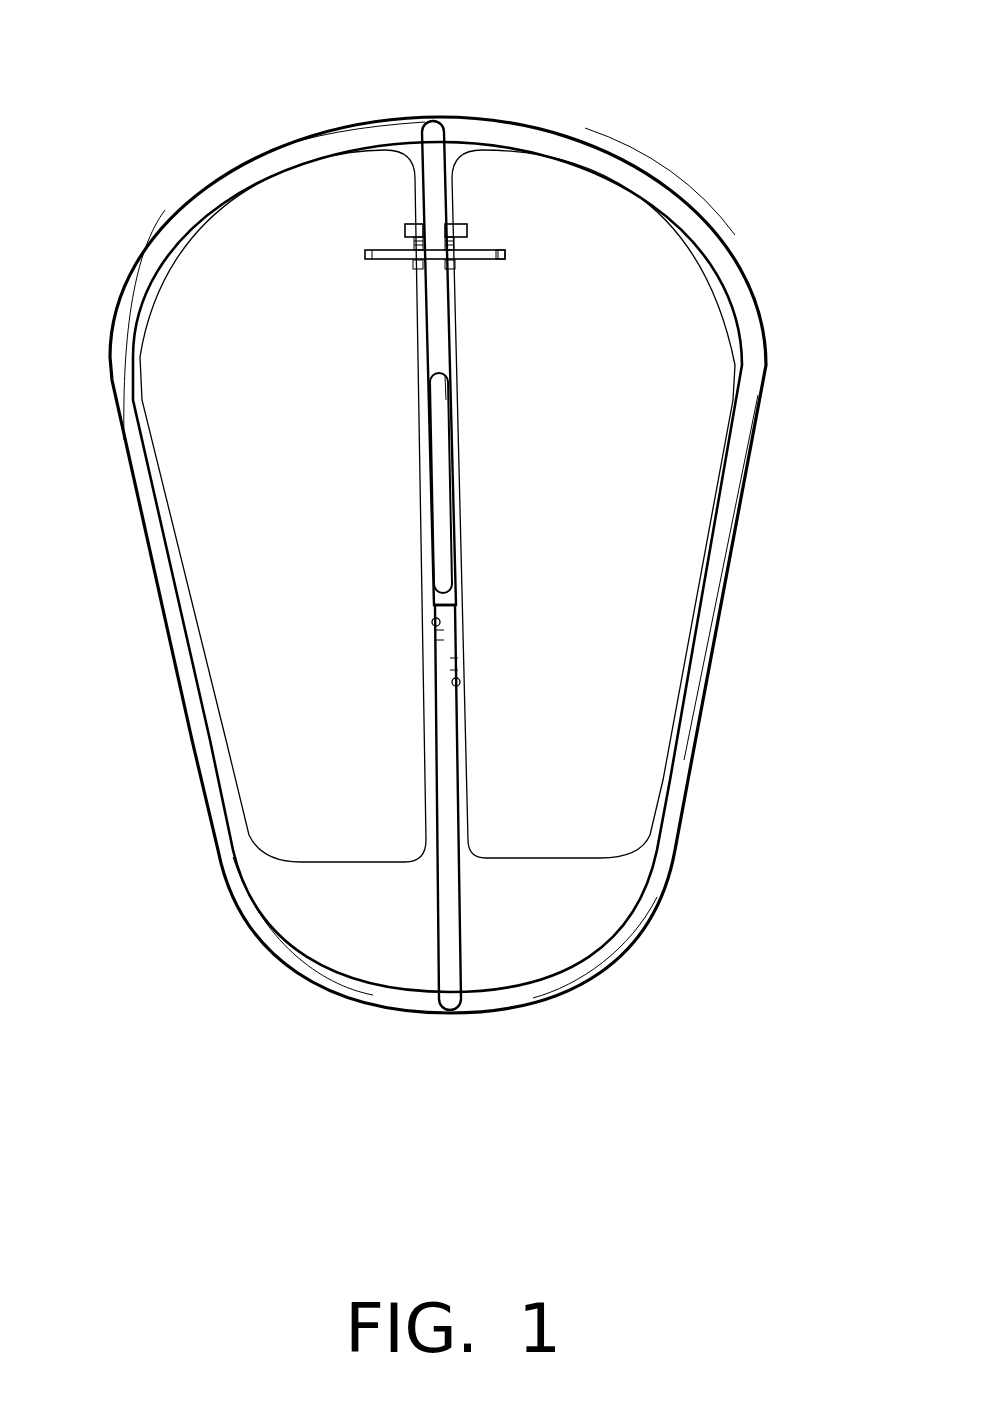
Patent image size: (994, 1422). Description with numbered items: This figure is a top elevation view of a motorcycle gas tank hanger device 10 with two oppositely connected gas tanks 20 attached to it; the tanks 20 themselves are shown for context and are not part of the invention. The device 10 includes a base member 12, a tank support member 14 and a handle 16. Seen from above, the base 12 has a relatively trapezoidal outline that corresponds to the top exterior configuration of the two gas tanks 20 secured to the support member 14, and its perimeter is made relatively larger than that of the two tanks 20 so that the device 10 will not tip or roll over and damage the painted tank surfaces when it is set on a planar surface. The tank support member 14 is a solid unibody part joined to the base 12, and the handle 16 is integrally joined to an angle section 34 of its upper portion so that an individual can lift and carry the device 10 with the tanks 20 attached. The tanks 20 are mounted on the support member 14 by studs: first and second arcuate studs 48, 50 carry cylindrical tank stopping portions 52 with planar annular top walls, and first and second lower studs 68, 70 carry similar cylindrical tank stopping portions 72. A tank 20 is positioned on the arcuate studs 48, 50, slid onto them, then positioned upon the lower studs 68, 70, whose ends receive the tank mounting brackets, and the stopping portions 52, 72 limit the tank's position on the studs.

The motorcycle gas tank hanger device 10 is at (706, 128).
The base member 12 is at (722, 237).
The tank support member 14 is at (476, 565).
The handle 16 is at (445, 535).
The motorcycle gas tanks 20 is at (205, 572).
The angle section 34 is at (450, 897).
The first arcuate stud 48 is at (506, 252).
The second arcuate stud 50 is at (455, 286).
The cylindrical tank stopping portions 52 is at (424, 269).
The first lower stud 68 is at (462, 232).
The second lower stud 70 is at (405, 231).
The cylindrical tank stopping portions 72 is at (413, 226).